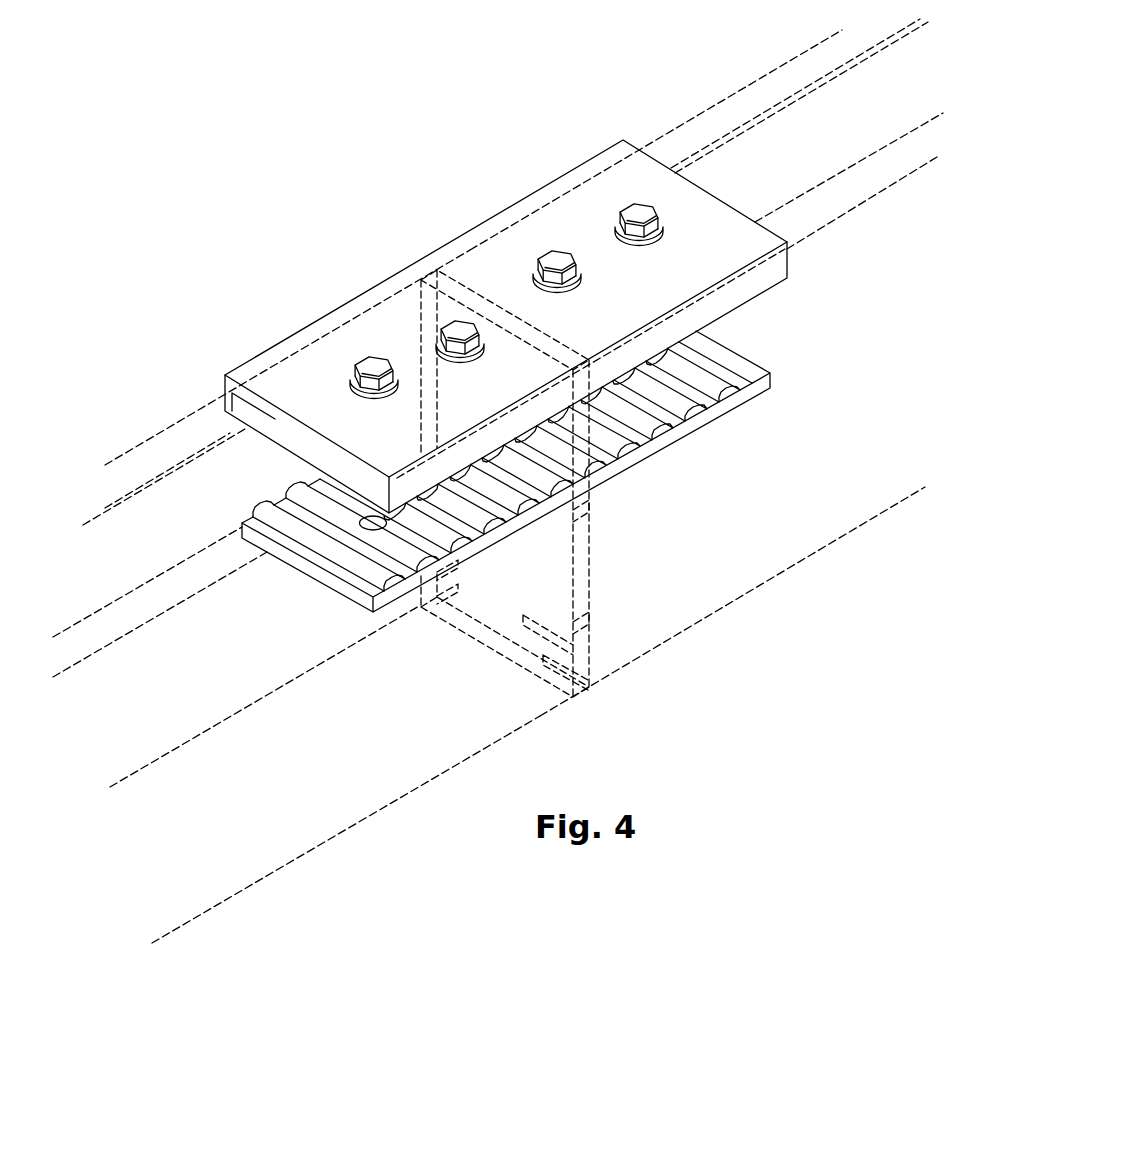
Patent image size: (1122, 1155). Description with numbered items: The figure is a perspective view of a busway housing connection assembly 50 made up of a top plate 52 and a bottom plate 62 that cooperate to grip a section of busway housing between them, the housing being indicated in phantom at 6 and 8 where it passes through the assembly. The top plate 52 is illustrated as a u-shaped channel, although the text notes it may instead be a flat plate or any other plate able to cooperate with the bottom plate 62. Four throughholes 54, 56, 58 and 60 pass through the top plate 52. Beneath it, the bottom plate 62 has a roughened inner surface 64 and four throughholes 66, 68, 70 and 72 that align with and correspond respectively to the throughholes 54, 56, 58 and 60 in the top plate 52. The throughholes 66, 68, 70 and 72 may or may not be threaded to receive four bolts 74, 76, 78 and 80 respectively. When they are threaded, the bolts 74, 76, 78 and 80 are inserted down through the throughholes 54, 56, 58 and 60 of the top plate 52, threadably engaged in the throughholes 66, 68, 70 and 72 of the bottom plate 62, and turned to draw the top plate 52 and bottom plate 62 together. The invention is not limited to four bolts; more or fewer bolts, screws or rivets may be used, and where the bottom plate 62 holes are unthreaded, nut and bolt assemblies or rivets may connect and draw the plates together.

The rail 6 is at (168, 497).
The rail 8 is at (800, 120).
The busway housing connection assembly 50 is at (265, 182).
The top plate 52 is at (790, 264).
The throughhole 54 is at (358, 399).
The throughhole 56 is at (485, 338).
The throughhole 58 is at (580, 275).
The throughhole 60 is at (663, 224).
The bottom plate 62 is at (541, 498).
The roughened inner surface 64 is at (272, 516).
The throughhole 66 is at (385, 532).
The throughhole 68 is at (461, 477).
The throughhole 70 is at (561, 419).
The throughhole 72 is at (690, 414).
The bolt 74 is at (366, 362).
The bolt 76 is at (452, 322).
The bolt 78 is at (547, 251).
The bolt 80 is at (633, 205).